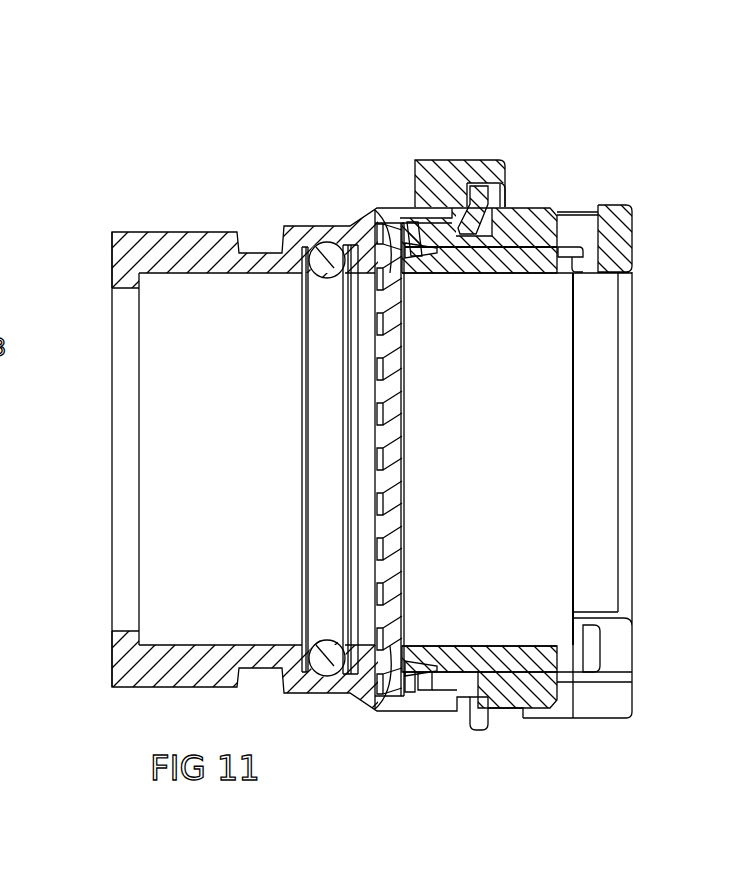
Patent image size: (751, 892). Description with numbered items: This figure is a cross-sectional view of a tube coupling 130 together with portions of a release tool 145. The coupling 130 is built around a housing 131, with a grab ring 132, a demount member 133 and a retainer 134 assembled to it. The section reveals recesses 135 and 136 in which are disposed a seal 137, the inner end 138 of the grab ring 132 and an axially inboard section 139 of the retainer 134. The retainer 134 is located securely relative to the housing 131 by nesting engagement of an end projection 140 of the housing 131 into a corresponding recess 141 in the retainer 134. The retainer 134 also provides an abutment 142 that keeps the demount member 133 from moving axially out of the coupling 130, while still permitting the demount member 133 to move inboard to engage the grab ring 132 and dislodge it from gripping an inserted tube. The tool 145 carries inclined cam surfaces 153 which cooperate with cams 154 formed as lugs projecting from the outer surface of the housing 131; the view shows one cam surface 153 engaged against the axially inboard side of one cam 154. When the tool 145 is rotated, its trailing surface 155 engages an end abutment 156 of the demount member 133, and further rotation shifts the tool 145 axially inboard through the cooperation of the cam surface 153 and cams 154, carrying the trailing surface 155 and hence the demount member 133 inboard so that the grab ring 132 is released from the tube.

The tube coupling 130 is at (634, 146).
The housing 131 is at (303, 226).
The grab ring 132 is at (375, 222).
The demount member 133 is at (530, 260).
The retainer 134 is at (535, 245).
The recess 135 is at (320, 279).
The recess 136 is at (432, 262).
The seal 137 is at (327, 282).
The inner end of the grab ring 138 is at (392, 215).
The axially inboard section of the retainer 139 is at (418, 692).
The end projection of the housing 140 is at (500, 685).
The recess in the retainer 141 is at (459, 697).
The abutment 142 is at (465, 665).
The tool 145 is at (430, 178).
The cam surface 153 is at (470, 170).
The cam 154 is at (510, 205).
The trailing surface 155 is at (560, 280).
The end abutment 156 is at (620, 262).